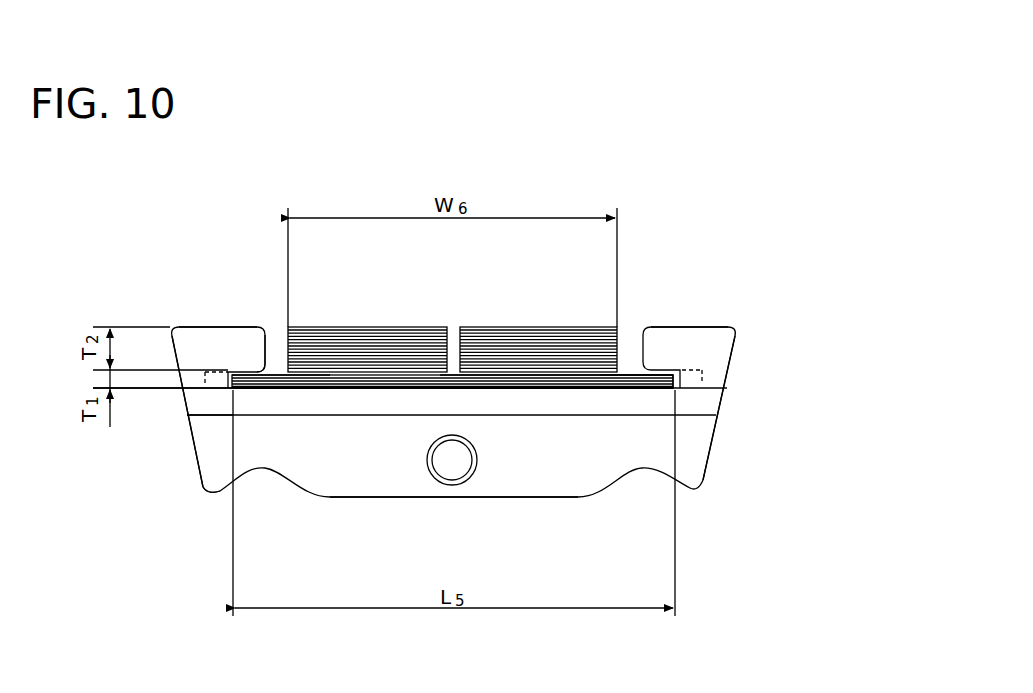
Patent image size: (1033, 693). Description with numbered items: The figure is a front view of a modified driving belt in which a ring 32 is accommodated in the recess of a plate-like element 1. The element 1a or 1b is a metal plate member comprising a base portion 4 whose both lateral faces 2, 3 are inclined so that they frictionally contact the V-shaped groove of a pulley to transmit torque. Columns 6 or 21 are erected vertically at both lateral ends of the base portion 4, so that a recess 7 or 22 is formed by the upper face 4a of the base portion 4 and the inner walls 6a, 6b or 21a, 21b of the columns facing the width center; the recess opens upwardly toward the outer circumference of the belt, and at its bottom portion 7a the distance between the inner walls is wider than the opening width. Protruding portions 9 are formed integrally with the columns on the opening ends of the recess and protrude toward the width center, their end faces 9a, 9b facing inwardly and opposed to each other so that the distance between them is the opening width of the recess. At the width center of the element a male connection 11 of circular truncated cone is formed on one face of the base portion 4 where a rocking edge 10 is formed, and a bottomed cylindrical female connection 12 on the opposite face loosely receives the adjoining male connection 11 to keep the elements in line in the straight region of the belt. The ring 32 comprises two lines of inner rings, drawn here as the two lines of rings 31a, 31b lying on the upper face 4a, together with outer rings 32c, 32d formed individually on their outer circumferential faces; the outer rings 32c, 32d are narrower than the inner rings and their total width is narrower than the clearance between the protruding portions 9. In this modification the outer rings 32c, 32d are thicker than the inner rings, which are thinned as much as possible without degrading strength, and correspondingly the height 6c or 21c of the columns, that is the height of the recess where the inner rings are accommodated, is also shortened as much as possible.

The element 1 is at (229, 609).
The element 1a is at (229, 609).
The element 1b is at (221, 566).
The lateral face 2 is at (707, 478).
The lateral face 3 is at (203, 487).
The base portion 4 is at (607, 473).
The upper face 4a is at (556, 460).
The column 6 is at (475, 371).
The inner wall 6a is at (235, 418).
The inner wall 6b is at (667, 388).
The height of the column 6c is at (453, 419).
The recess 7 is at (452, 308).
The bottom portion 7a is at (545, 386).
The protruding portion 9 is at (220, 342).
The end face 9a is at (277, 340).
The end face 9b is at (640, 345).
The rocking edge 10 is at (383, 416).
The male connection 11 is at (462, 500).
The female connection 12 is at (452, 472).
The column 21 is at (183, 342).
The inner wall 21a is at (185, 440).
The inner wall 21b is at (715, 372).
The height of the column 21c is at (207, 390).
The recess 22 is at (413, 281).
The ring 31a is at (335, 386).
The ring 31b is at (632, 388).
The ring 32 is at (452, 305).
The outer ring 32c is at (332, 345).
The outer ring 32d is at (568, 345).